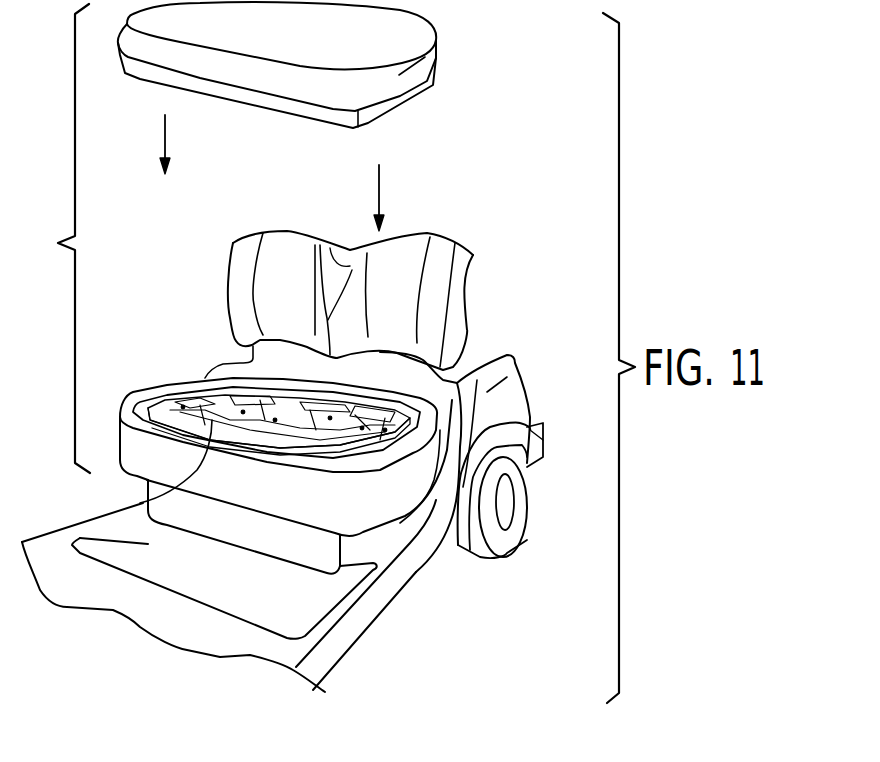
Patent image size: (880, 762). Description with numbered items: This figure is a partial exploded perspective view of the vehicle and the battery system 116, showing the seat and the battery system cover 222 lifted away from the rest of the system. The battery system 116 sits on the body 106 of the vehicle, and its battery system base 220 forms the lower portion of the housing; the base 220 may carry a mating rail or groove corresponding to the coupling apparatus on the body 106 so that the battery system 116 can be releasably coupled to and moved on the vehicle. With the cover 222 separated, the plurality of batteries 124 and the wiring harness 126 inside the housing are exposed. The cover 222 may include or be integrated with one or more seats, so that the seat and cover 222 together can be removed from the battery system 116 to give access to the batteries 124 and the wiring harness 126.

The body 106 is at (513, 363).
The battery system 116 is at (56, 238).
The batteries 124 is at (143, 505).
The wiring harness 126 is at (218, 402).
The battery system base 220 is at (383, 513).
The cover 222 is at (393, 80).